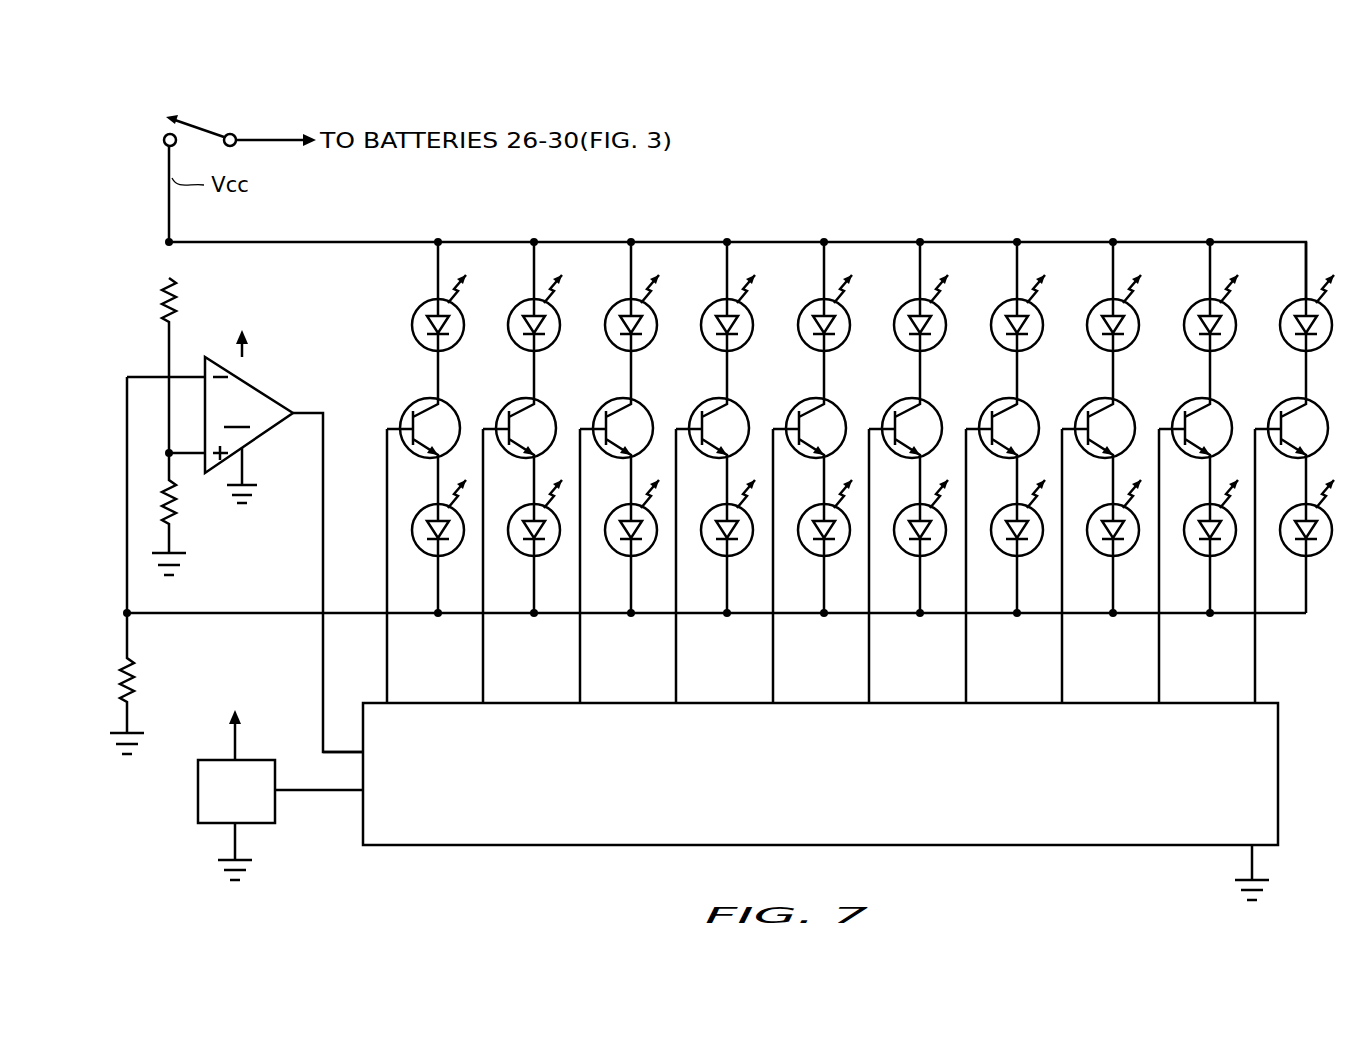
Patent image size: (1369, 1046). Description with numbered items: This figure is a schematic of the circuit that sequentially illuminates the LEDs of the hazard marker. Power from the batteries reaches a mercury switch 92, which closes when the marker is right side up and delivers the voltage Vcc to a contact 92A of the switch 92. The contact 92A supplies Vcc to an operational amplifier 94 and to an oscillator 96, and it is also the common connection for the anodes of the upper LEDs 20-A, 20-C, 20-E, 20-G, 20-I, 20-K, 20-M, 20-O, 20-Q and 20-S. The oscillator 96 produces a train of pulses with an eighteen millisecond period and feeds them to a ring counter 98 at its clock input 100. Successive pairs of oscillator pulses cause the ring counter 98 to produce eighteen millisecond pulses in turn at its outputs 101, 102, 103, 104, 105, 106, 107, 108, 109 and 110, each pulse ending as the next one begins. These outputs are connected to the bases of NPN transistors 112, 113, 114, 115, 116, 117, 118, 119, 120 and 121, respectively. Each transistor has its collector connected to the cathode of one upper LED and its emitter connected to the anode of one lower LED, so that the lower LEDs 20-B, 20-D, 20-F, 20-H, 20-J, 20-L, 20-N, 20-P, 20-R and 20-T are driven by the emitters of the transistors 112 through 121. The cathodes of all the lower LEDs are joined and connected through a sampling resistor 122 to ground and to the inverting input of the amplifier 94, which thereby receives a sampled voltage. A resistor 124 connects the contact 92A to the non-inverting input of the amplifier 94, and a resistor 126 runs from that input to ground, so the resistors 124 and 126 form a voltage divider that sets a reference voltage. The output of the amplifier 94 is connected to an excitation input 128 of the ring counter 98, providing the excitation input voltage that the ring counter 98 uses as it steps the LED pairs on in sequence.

The contact 92A is at (163, 136).
The mercury switch 92 is at (212, 128).
The resistor 124 is at (172, 290).
The operational amplifier 94 is at (245, 530).
The resistor 126 is at (172, 520).
The sampling resistor 122 is at (130, 668).
The oscillator 96 is at (200, 808).
The clock input 100 is at (356, 794).
The excitation input 128 is at (346, 752).
The ring counter 98 is at (396, 845).
The output 101 is at (387, 702).
The output 102 is at (522, 566).
The output 103 is at (619, 566).
The output 104 is at (715, 566).
The output 105 is at (812, 566).
The output 106 is at (908, 566).
The output 107 is at (1005, 566).
The output 108 is at (1101, 566).
The output 109 is at (1198, 566).
The output 110 is at (1294, 566).
The NPN transistor 112 is at (405, 412).
The NPN transistor 113 is at (516, 427).
The NPN transistor 114 is at (613, 427).
The NPN transistor 115 is at (709, 427).
The NPN transistor 116 is at (806, 427).
The NPN transistor 117 is at (902, 427).
The NPN transistor 118 is at (999, 427).
The NPN transistor 119 is at (1095, 427).
The NPN transistor 120 is at (1192, 427).
The NPN transistor 121 is at (1288, 427).
The LED 20-A is at (413, 317).
The LED 20-B is at (414, 546).
The LED 20-C is at (527, 277).
The LED 20-D is at (529, 568).
The LED 20-E is at (624, 277).
The LED 20-F is at (627, 568).
The LED 20-G is at (719, 277).
The LED 20-H is at (722, 568).
The LED 20-I is at (819, 277).
The LED 20-J is at (821, 568).
The LED 20-K is at (913, 277).
The LED 20-L is at (916, 568).
The LED 20-M is at (1009, 277).
The LED 20-N is at (1012, 568).
The LED 20-O is at (1105, 277).
The LED 20-P is at (1109, 568).
The LED 20-Q is at (1202, 277).
The LED 20-R is at (1205, 568).
The LED 20-S is at (1299, 277).
The LED 20-T is at (1302, 568).